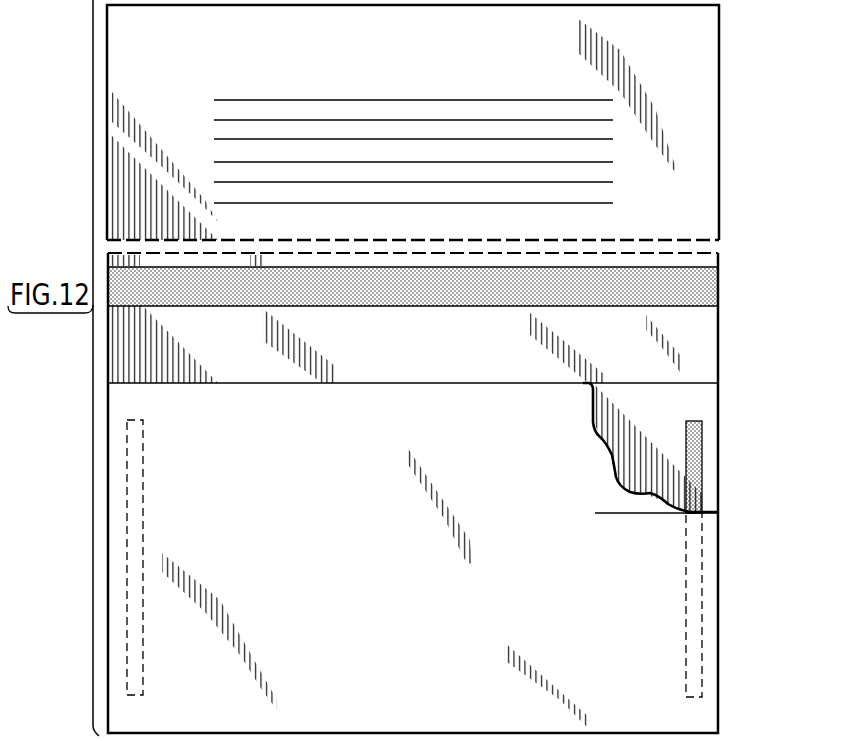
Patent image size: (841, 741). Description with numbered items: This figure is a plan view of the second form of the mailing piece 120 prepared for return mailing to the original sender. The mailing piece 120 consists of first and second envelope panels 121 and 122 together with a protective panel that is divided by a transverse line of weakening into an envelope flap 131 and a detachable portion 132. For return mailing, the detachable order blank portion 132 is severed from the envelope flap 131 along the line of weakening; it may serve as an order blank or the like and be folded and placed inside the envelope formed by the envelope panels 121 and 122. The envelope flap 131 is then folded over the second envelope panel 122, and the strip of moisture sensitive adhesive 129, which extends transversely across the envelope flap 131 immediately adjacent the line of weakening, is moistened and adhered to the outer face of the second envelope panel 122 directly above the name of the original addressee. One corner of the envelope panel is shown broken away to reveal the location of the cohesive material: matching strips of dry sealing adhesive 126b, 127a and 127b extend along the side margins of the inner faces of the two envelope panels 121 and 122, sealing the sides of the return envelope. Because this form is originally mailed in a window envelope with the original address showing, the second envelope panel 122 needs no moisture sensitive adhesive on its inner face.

The mailing piece 120 is at (726, 181).
The first envelope panel 121 is at (702, 408).
The second envelope panel 122 is at (708, 566).
The strip of dry sealing adhesive 126b is at (120, 505).
The strip of dry sealing adhesive 127a is at (698, 470).
The strip of dry sealing adhesive 127b is at (692, 624).
The strip of moisture sensitive adhesive 129 is at (716, 289).
The envelope flap 131 is at (700, 346).
The detachable portion 132 is at (696, 89).